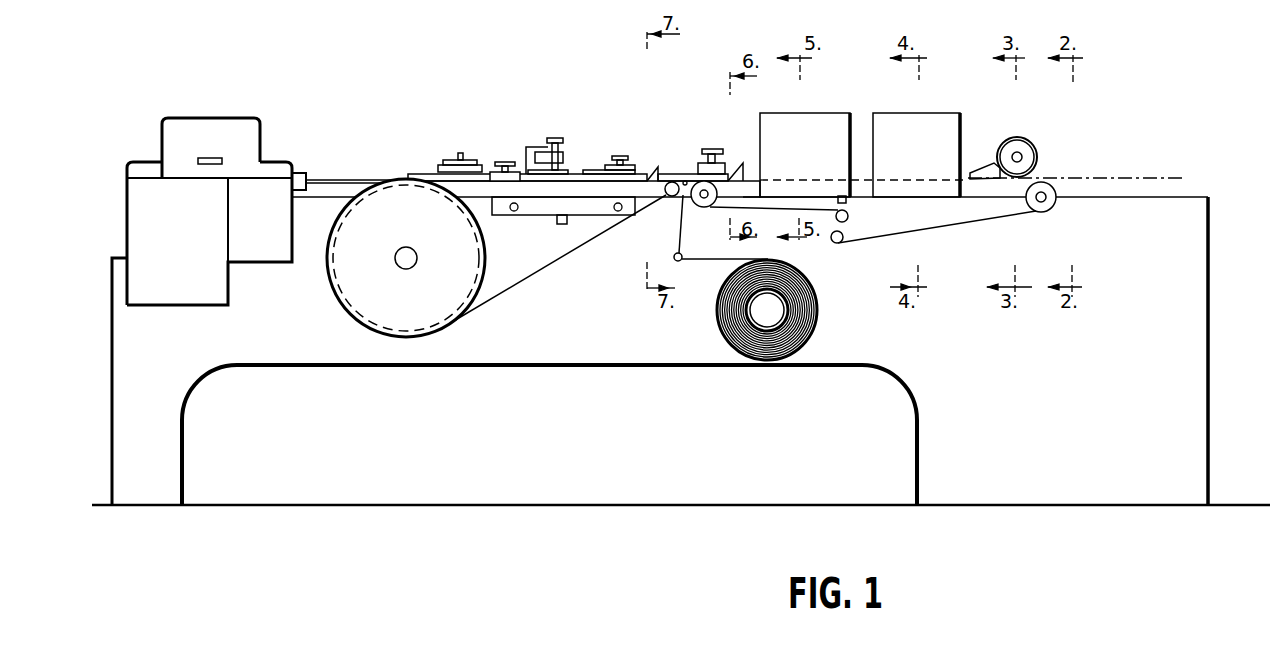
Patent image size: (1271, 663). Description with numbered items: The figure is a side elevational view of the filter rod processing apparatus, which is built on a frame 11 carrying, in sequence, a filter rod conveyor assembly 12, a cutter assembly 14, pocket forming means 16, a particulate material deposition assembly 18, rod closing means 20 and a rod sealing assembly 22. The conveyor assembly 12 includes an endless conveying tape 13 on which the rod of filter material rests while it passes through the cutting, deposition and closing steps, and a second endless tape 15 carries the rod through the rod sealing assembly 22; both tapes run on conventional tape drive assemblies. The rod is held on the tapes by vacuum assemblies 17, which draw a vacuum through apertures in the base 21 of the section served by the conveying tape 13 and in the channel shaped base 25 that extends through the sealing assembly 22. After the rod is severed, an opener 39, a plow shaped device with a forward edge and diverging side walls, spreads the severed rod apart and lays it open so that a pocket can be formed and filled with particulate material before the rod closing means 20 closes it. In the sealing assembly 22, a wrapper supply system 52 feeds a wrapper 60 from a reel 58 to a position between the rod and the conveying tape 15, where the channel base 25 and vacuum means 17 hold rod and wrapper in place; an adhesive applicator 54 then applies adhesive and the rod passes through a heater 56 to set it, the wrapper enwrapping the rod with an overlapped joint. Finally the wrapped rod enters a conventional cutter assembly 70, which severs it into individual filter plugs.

The frame 11 is at (1188, 397).
The filter rod conveyor assembly 12 is at (1021, 215).
The endless conveying tape 13 is at (936, 232).
The cutter assembly 14 is at (1036, 147).
The second endless tape 15 is at (530, 277).
The pocket forming means 16 is at (927, 148).
The vacuum assemblies 17 is at (556, 222).
The particulate material deposition assembly 18 is at (812, 145).
The rod closing means 20 is at (673, 180).
The base 21 is at (734, 188).
The rod sealing assembly 22 is at (505, 161).
The channel shaped base 25 is at (612, 190).
The opener 39 is at (985, 170).
The wrapper supply system 52 is at (742, 353).
The adhesive applicator 54 is at (550, 140).
The heater 56 is at (450, 160).
The reel 58 is at (813, 320).
The wrapper 60 is at (720, 260).
The cutter assembly 70 is at (247, 123).